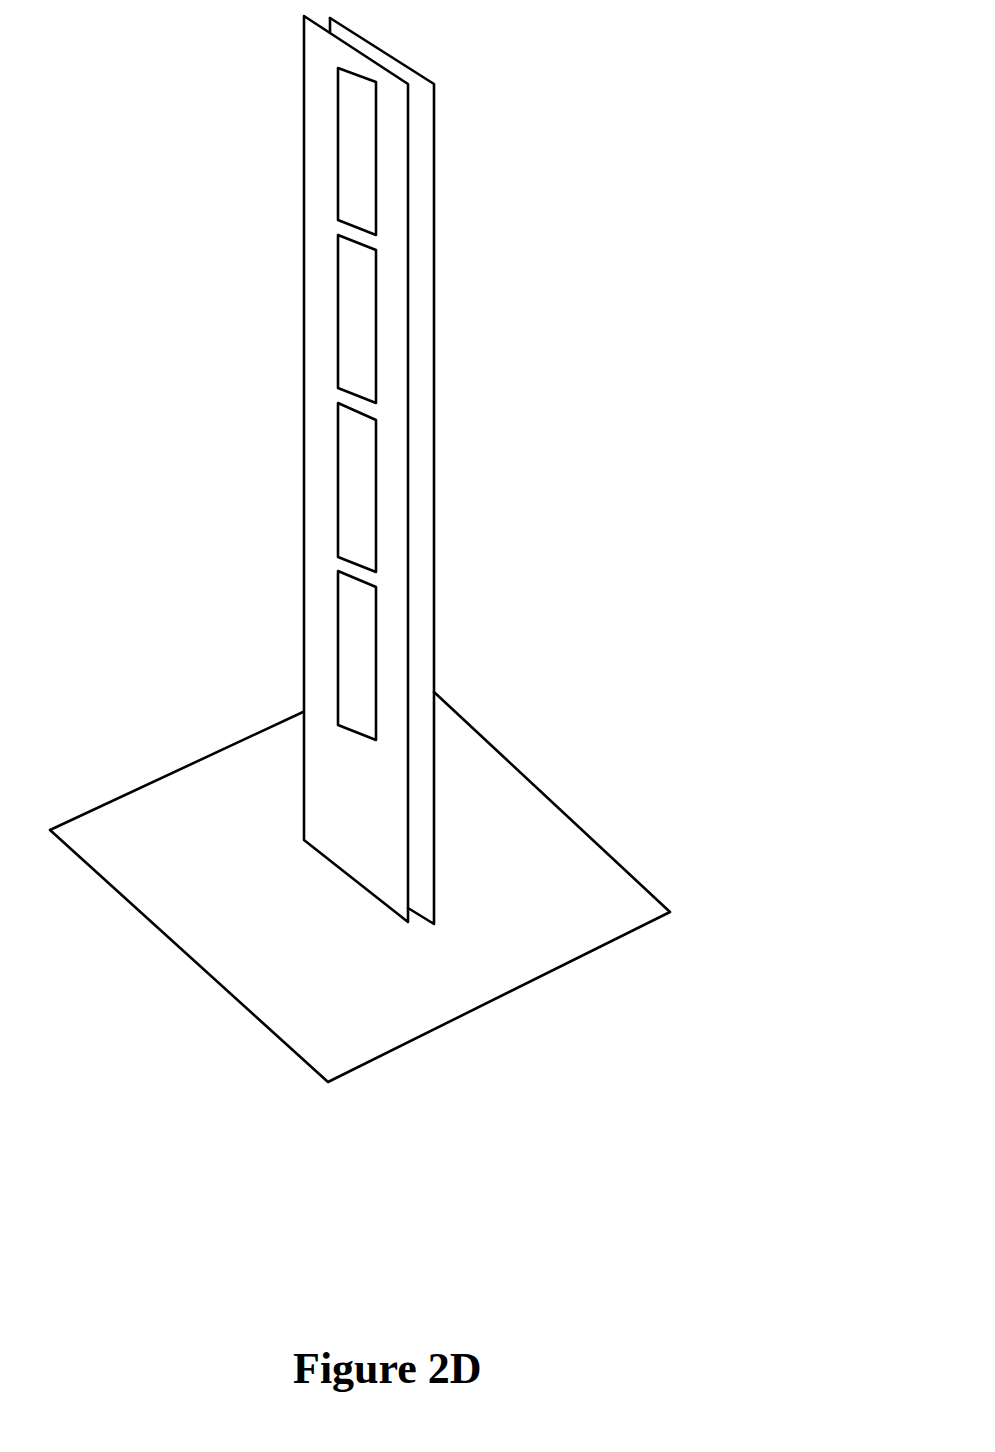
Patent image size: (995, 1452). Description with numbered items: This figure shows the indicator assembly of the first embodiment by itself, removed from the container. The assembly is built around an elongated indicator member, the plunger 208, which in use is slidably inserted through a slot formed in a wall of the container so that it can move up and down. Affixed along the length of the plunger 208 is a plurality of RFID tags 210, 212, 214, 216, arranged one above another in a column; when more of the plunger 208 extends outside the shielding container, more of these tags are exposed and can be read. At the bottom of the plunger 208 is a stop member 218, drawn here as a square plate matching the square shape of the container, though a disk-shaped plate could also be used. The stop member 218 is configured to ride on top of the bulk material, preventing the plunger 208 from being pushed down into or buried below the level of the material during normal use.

The plunger 208 is at (434, 243).
The RFID tag 210 is at (338, 128).
The RFID tag 212 is at (338, 296).
The RFID tag 214 is at (338, 465).
The RFID tag 216 is at (338, 633).
The stop member 218 is at (577, 825).